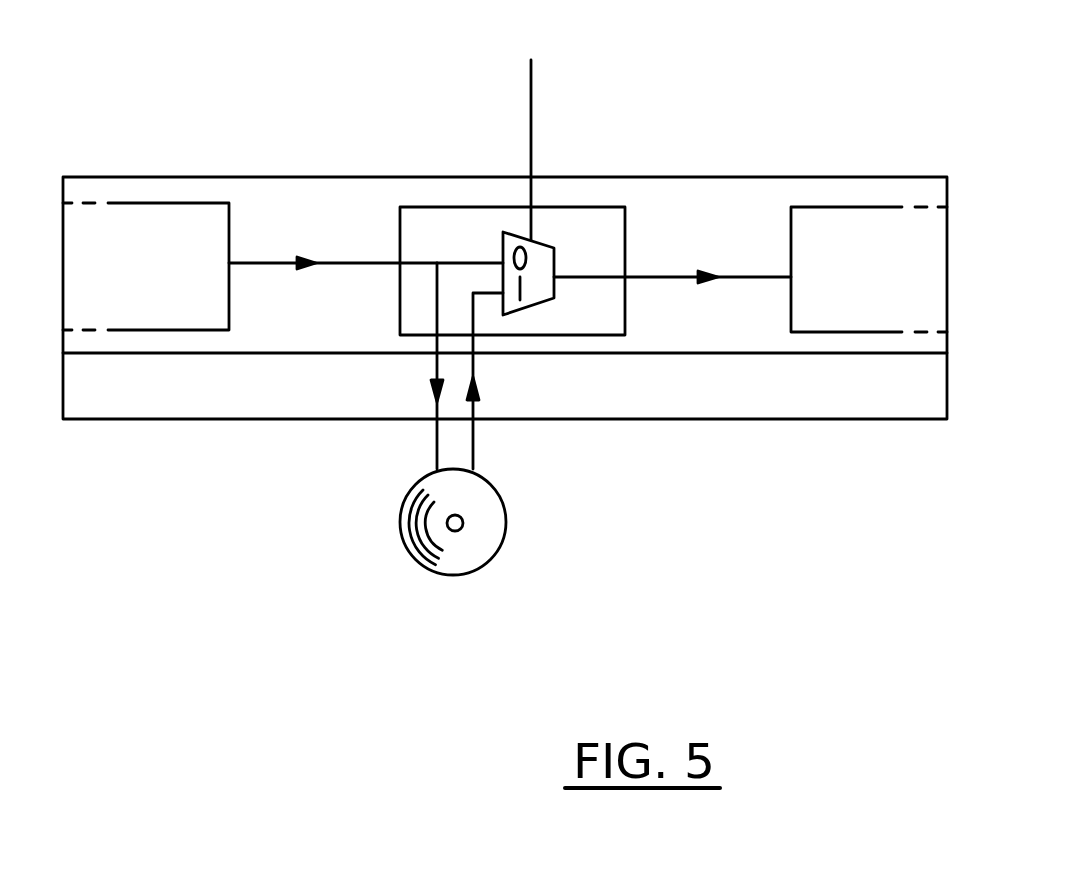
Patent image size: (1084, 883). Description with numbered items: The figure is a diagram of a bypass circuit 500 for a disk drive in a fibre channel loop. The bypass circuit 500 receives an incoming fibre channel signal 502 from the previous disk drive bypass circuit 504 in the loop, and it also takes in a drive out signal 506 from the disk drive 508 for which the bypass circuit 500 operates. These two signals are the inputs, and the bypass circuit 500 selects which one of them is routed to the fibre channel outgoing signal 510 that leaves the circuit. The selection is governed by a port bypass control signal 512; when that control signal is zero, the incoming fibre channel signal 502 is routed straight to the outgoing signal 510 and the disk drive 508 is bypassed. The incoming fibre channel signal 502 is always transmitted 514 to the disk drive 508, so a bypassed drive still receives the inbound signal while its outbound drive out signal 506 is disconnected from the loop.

The bypass circuit 500 is at (455, 207).
The incoming fibre channel signal 502 is at (328, 263).
The previous disk drive bypass circuit 504 is at (139, 203).
The drive out signal 506 is at (477, 438).
The disk drive 508 is at (497, 548).
The fibre channel outgoing signal 510 is at (743, 270).
The port bypass control signal 512 is at (531, 93).
The transmission to the disk drive 514 is at (437, 442).